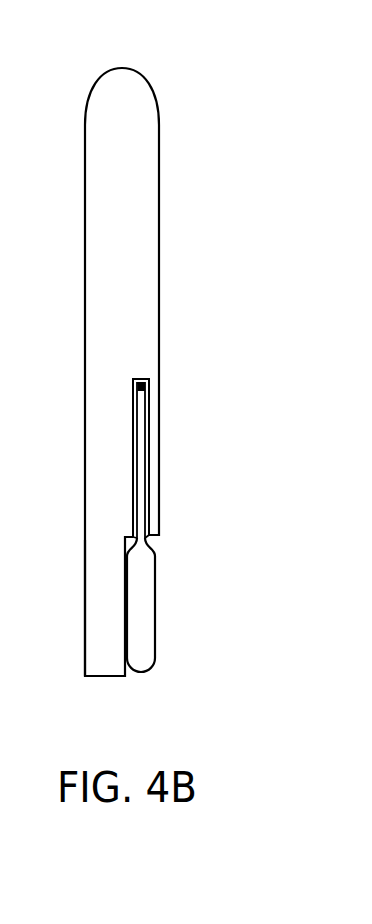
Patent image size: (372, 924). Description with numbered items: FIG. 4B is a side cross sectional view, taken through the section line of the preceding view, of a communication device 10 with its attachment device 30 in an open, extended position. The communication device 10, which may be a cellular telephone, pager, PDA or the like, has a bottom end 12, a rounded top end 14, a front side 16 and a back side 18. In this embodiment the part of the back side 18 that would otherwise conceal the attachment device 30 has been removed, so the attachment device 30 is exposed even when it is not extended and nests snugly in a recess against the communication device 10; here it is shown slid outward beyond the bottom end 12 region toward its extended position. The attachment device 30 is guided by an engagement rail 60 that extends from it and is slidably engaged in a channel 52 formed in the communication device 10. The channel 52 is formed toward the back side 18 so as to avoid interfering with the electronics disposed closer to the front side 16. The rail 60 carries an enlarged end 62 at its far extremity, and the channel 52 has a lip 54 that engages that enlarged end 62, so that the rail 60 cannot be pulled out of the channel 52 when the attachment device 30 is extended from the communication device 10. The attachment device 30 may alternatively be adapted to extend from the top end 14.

The communication device 10 is at (107, 300).
The bottom end 12 is at (100, 677).
The top end 14 is at (112, 68).
The front side 16 is at (85, 591).
The back side 18 is at (159, 305).
The attachment device 30 is at (152, 565).
The channel 52 is at (133, 400).
The lip 54 is at (150, 533).
The engagement rail 60 is at (143, 506).
The enlarged end 62 is at (137, 381).